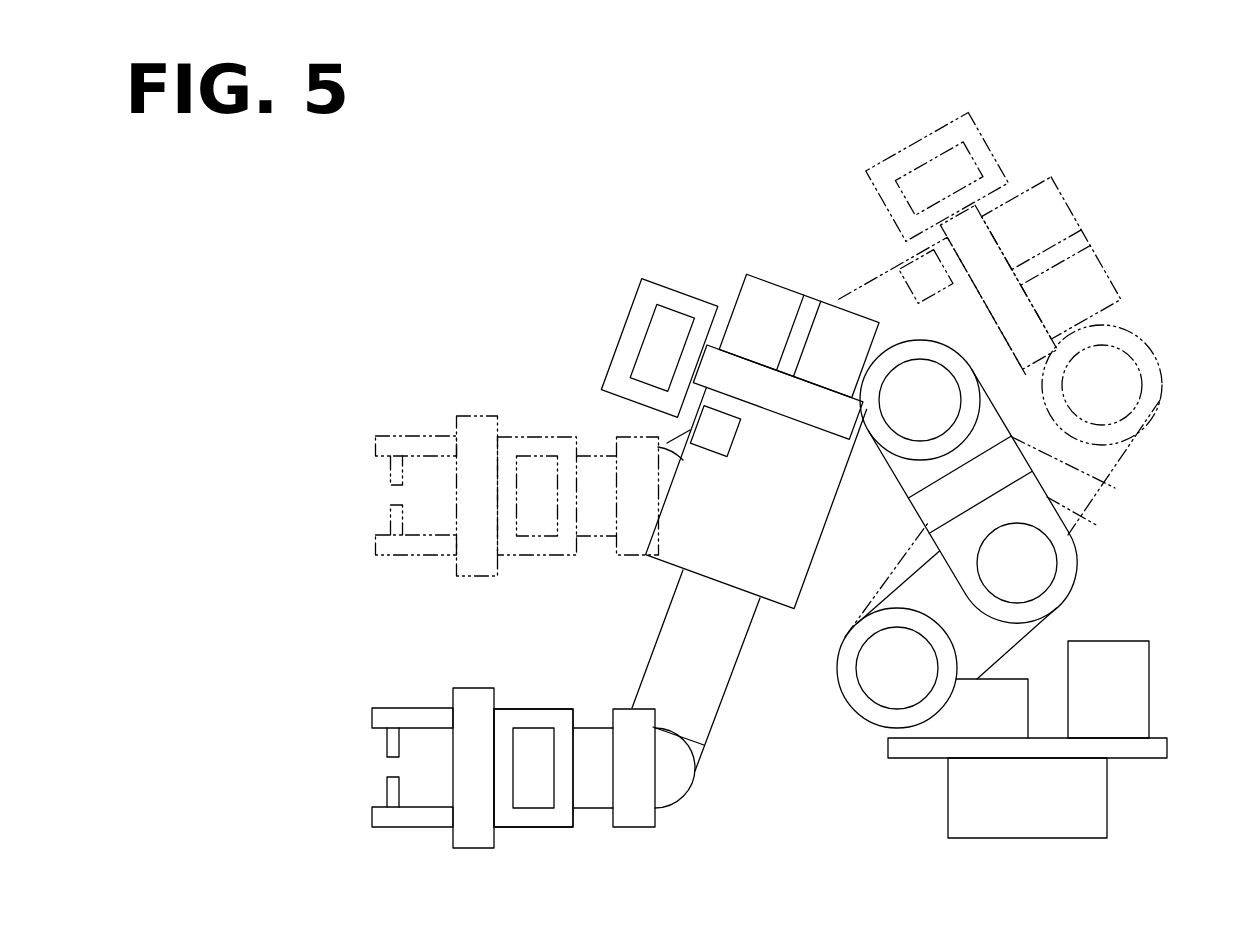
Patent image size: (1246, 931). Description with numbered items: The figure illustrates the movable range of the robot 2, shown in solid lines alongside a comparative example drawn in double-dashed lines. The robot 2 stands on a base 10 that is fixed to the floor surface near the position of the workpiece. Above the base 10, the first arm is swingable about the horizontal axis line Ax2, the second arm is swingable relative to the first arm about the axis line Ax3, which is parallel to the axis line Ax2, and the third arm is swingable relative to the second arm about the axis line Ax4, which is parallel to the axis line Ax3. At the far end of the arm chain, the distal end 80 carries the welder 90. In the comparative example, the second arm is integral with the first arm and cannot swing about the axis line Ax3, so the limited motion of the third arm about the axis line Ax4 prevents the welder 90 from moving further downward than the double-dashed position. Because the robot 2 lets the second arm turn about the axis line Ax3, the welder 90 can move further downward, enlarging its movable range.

The robot 2 is at (750, 244).
The base 10 is at (962, 799).
The distal end 80 is at (535, 548).
The welder 90 is at (494, 632).
The axis line Ax2 is at (897, 668).
The axis line Ax3 is at (1017, 563).
The axis line Ax4 is at (918, 400).